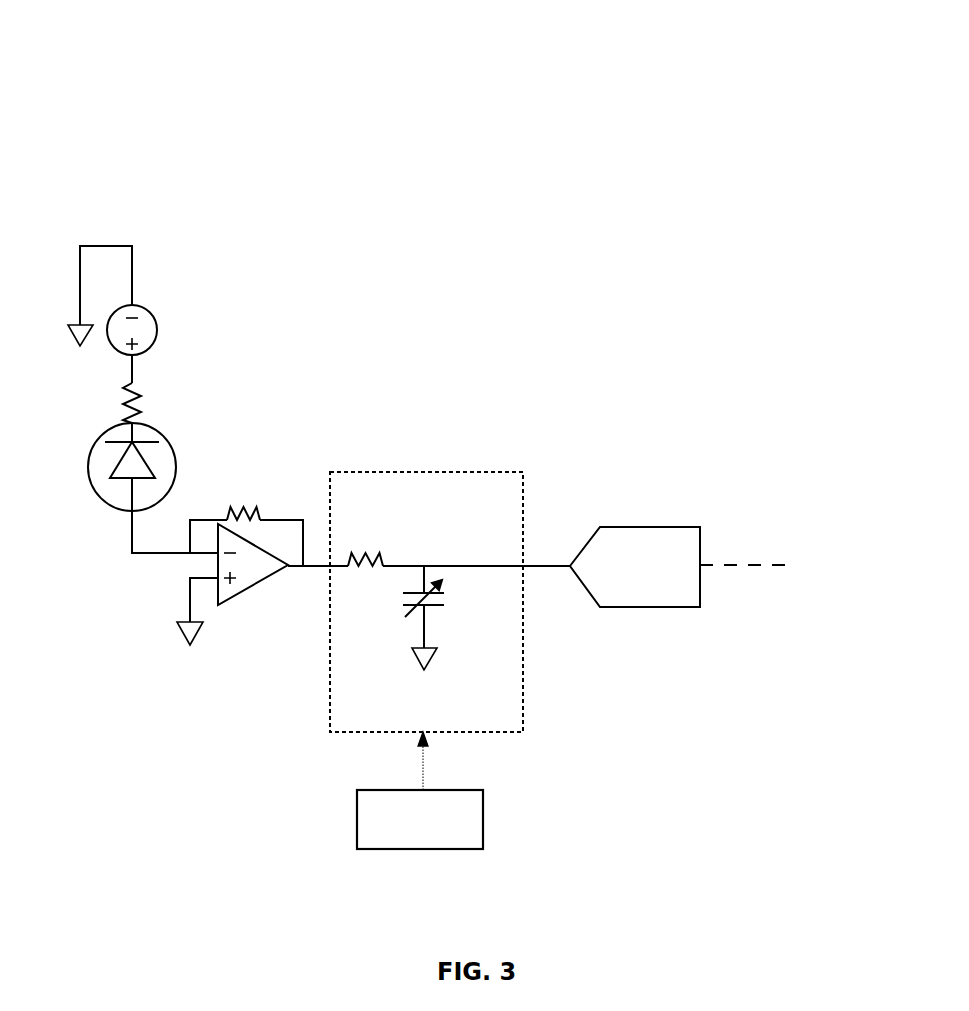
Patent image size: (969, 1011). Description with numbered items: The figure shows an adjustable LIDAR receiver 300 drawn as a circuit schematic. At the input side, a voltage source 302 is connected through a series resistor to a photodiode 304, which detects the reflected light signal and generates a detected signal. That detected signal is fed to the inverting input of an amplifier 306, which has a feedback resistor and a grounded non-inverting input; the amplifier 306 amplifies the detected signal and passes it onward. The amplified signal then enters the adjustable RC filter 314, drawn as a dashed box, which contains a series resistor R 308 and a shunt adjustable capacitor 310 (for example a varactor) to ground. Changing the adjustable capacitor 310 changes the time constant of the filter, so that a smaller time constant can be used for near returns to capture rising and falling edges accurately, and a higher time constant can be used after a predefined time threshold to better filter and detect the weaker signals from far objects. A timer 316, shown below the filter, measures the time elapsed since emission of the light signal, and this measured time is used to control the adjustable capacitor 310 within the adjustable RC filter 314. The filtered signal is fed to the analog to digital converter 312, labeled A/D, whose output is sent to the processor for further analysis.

The adjustable LIDAR receiver 300 is at (86, 82).
The voltage source 302 is at (163, 325).
The photodiode 304 is at (178, 464).
The amplifier 306 is at (252, 588).
The R 308 is at (380, 528).
The adjustable capacitor 310 is at (452, 623).
The analog to digital converter 312 is at (660, 527).
The adjustable RC filter 314 is at (472, 733).
The timer 316 is at (483, 807).